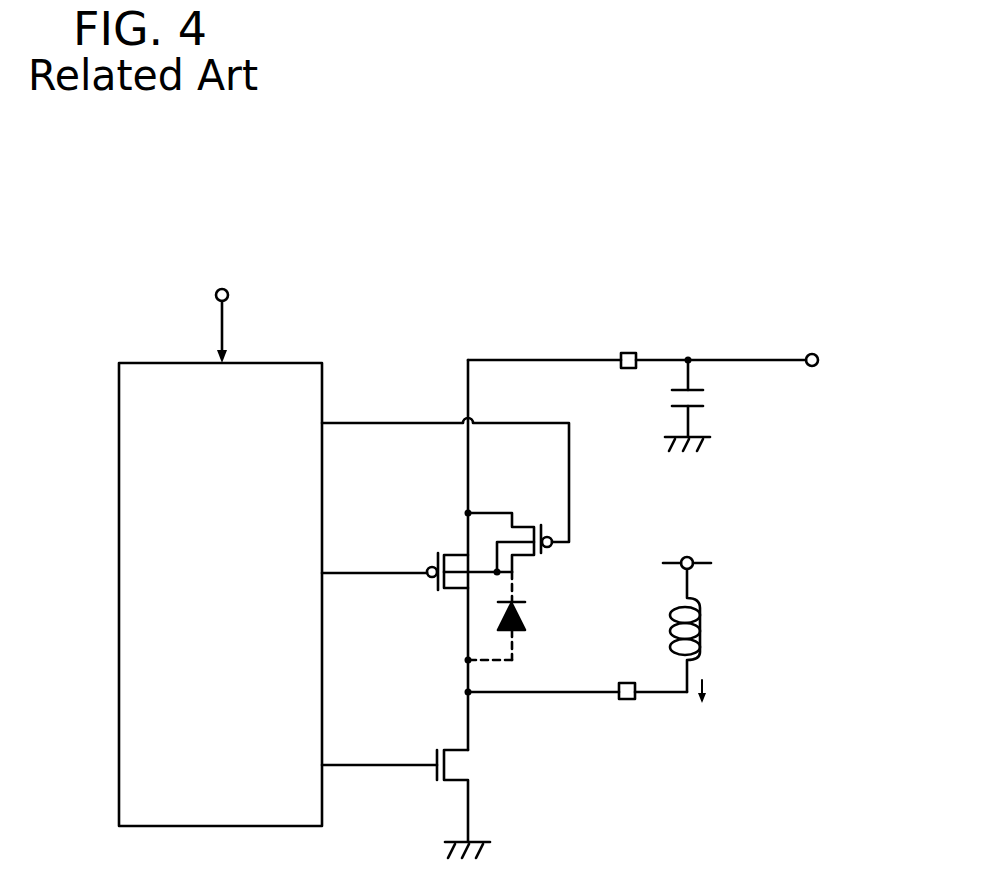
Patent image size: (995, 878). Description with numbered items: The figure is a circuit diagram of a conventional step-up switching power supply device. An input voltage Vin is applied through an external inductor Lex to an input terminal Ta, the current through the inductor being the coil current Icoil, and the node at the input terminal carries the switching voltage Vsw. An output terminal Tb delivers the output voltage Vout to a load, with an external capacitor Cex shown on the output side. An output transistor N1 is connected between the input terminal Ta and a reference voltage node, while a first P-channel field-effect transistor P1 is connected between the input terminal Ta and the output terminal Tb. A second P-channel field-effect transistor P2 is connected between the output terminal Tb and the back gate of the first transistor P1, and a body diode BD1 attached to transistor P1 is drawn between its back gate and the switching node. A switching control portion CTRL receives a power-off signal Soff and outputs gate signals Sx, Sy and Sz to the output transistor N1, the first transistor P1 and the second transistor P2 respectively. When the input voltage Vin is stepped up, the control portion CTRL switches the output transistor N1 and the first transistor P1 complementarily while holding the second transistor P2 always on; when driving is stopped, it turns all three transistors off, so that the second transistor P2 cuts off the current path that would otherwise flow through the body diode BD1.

The switching control portion CTRL is at (119, 575).
The power-off signal Soff is at (224, 311).
The gate signal Sz is at (445, 467).
The gate signal Sy is at (374, 555).
The gate signal Sx is at (379, 751).
The first P-channel field-effect transistor P1 is at (455, 555).
The second P-channel field-effect transistor P2 is at (531, 527).
The body diode BD1 is at (524, 616).
The output transistor N1 is at (453, 784).
The switching voltage Vsw is at (547, 692).
The input terminal Ta is at (626, 683).
The output terminal Tb is at (626, 352).
The output voltage Vout is at (676, 361).
The external capacitor Cex is at (705, 399).
The input voltage Vin is at (687, 547).
The external inductor Lex is at (702, 633).
The coil current Icoil is at (732, 692).